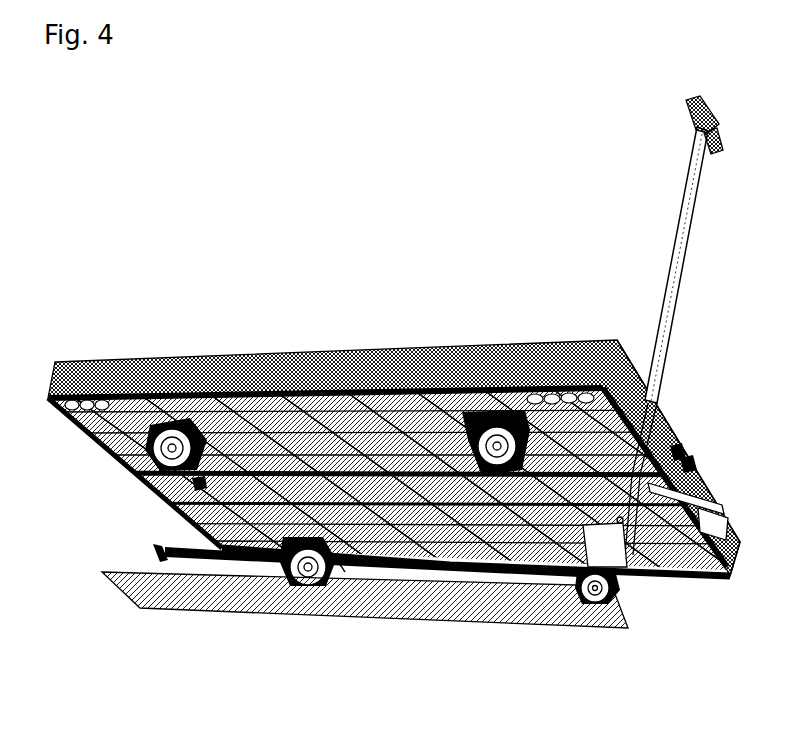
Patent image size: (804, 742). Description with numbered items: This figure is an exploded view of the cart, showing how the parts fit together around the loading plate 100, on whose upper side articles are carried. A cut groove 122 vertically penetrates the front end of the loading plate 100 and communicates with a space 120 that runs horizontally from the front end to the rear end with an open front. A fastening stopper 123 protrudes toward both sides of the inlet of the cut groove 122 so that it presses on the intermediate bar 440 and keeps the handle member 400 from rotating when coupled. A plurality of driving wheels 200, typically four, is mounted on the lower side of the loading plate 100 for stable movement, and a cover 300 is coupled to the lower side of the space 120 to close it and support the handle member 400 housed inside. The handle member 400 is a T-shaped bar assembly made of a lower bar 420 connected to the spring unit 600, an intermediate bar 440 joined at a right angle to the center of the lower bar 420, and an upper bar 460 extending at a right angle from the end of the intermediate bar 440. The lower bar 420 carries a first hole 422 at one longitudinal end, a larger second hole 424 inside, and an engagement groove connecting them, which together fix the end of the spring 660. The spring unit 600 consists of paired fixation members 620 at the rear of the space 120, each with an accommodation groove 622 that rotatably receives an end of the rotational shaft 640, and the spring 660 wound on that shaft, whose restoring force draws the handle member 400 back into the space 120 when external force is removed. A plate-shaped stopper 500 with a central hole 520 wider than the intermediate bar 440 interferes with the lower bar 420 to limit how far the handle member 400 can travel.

The loading plate 100 is at (400, 341).
The space 120 is at (183, 492).
The cut groove 122 is at (681, 450).
The fastening stopper 123 is at (690, 458).
The driving wheels 200 is at (165, 485).
The cover 300 is at (437, 608).
The handle member 400 is at (627, 331).
The lower bar 420 is at (577, 463).
The first hole 422 is at (607, 600).
The second hole 424 is at (580, 592).
The intermediate bar 440 is at (680, 232).
The upper bar 460 is at (687, 106).
The stopper 500 is at (706, 516).
The hole 520 is at (706, 504).
The spring unit 600 is at (371, 620).
The fixation members 620 is at (222, 552).
The accommodation grooves 622 is at (192, 483).
The rotational shaft 640 is at (160, 560).
The spring 660 is at (307, 605).